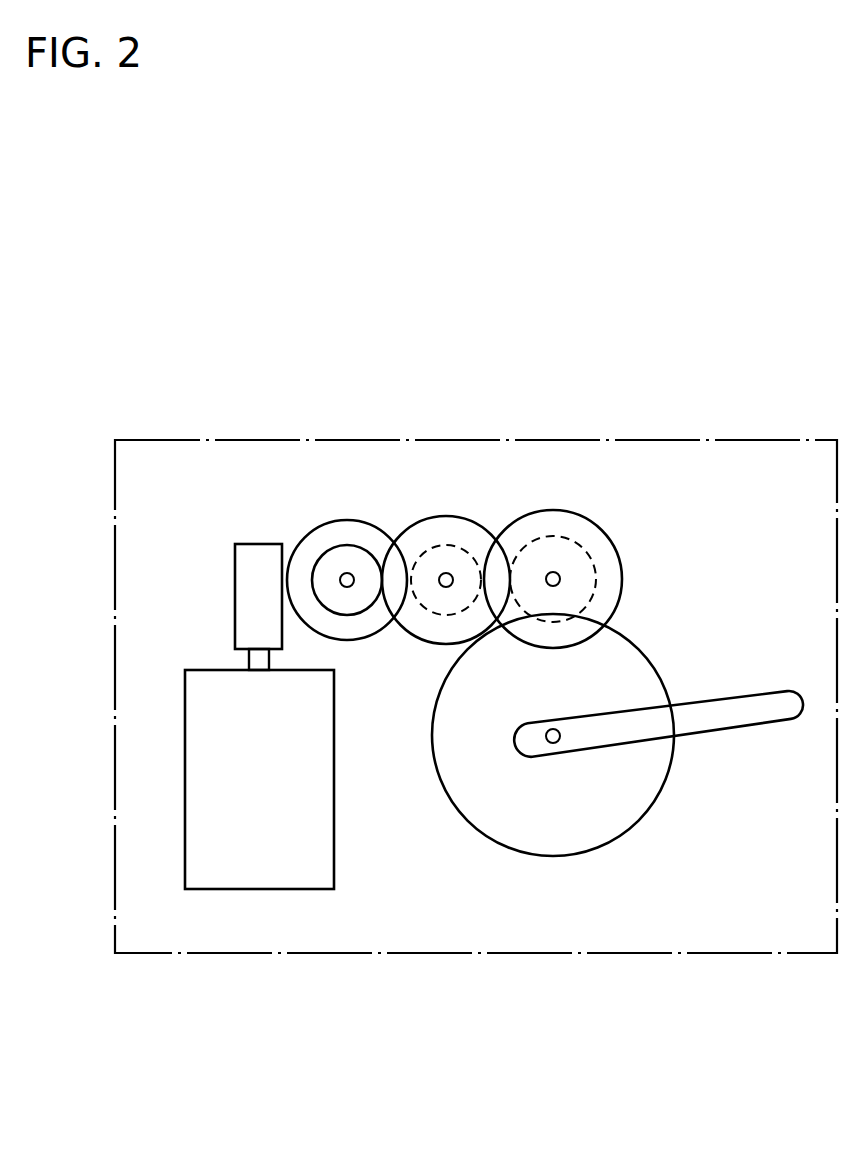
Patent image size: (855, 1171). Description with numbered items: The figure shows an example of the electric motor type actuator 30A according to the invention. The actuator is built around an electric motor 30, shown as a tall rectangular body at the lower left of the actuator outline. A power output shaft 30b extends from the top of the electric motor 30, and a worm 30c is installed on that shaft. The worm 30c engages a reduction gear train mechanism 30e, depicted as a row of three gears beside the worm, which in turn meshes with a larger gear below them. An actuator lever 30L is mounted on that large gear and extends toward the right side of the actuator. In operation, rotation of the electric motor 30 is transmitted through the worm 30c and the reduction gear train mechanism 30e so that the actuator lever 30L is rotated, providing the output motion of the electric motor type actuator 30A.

The electric motor 30 is at (258, 880).
The electric motor type actuator 30A is at (723, 437).
The power output shaft 30b is at (249, 660).
The worm 30c is at (235, 579).
The reduction gear train mechanism 30e is at (451, 512).
The actuator lever 30L is at (725, 728).